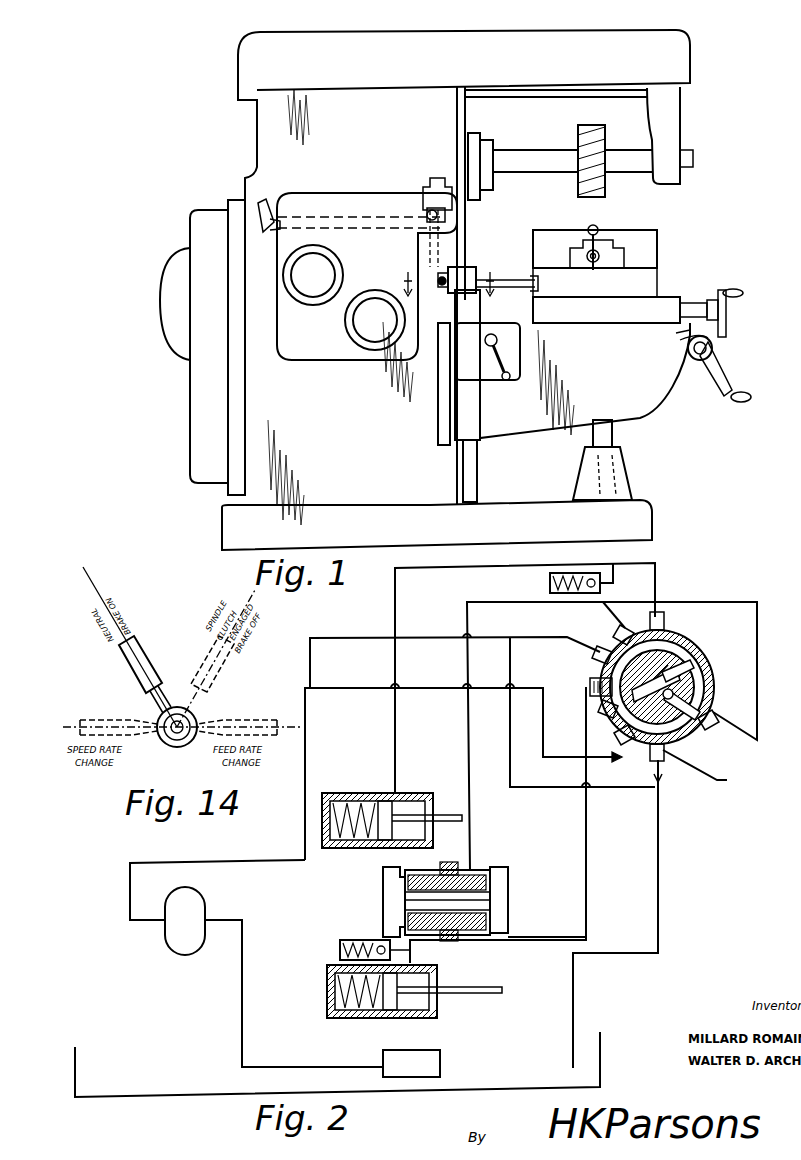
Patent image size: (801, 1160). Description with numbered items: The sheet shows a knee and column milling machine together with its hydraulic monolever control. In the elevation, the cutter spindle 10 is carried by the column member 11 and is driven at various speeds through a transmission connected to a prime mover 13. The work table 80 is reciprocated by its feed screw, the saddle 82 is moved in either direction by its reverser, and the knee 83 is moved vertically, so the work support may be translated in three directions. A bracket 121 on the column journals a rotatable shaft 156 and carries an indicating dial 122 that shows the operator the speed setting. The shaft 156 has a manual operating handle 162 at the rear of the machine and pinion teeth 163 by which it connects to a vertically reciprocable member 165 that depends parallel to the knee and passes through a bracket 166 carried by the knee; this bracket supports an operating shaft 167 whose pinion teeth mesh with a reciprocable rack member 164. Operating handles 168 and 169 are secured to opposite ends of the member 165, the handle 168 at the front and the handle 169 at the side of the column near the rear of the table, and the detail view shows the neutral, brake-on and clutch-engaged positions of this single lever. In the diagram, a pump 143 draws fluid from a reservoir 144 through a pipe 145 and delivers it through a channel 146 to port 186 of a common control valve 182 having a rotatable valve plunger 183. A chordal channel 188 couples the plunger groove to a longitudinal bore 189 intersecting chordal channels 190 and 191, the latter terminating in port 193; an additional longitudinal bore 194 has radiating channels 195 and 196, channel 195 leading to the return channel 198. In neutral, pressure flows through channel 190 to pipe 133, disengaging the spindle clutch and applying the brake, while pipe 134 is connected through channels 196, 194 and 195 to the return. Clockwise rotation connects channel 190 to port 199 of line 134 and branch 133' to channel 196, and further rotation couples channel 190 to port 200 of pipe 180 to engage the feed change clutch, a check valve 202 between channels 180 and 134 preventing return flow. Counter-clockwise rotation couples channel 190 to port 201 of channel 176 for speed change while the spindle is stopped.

In FIG. 1, the cutter spindle 10 is at (470, 140).
In FIG. 1, the column member 11 is at (262, 127).
In FIG. 1, the prime mover 13 is at (449, 292).
In FIG. 1, the work table 80 is at (640, 238).
In FIG. 1, the saddle 82 is at (653, 295).
In FIG. 1, the knee 83 is at (660, 395).
In FIG. 1, the bracket 121 is at (325, 193).
In FIG. 1, the indicating dial 122 is at (355, 340).
In FIG. 1, the rotatable shaft 156 is at (385, 215).
In FIG. 1, the manual operating handle 162 is at (262, 200).
In FIG. 1, the pinion teeth 163 is at (443, 185).
In FIG. 1, the reciprocable rack member 164 is at (425, 205).
In FIG. 1, the vertically reciprocable member 165 is at (442, 425).
In FIG. 1, the bracket 166 is at (468, 267).
In FIG. 1, the operating shaft 167 is at (483, 280).
In FIG. 1, the operating handle 168 is at (700, 259).
In FIG. 1, the operating handle 169 is at (418, 279).
In FIG. 2, the channel 133 is at (463, 736).
In FIG. 2, the branch 133' is at (638, 717).
In FIG. 2, the channel 134 is at (537, 603).
In FIG. 2, the pump 143 is at (188, 903).
In FIG. 2, the reservoir 144 is at (603, 1057).
In FIG. 2, the pipe 145 is at (242, 982).
In FIG. 2, the channel 146 is at (130, 910).
In FIG. 2, the channel 176 is at (590, 757).
In FIG. 2, the pressure pipe 180 is at (655, 563).
In FIG. 2, the common control valve 182 is at (703, 668).
In FIG. 2, the rotatable valve plunger 183 is at (706, 684).
In FIG. 2, the port 186 is at (648, 752).
In FIG. 2, the chordal channel 188 is at (620, 733).
In FIG. 2, the longitudinal bore 189 is at (614, 647).
In FIG. 2, the chordal channel 190 is at (592, 680).
In FIG. 2, the chordal channel 191 is at (678, 660).
In FIG. 2, the port 193 is at (700, 656).
In FIG. 2, the longitudinal bore 194 is at (710, 698).
In FIG. 2, the channel 195 is at (672, 750).
In FIG. 2, the channel 196 is at (700, 728).
In FIG. 2, the return channel 198 is at (661, 929).
In FIG. 2, the port 199 is at (634, 630).
In FIG. 2, the port 200 is at (670, 652).
In FIG. 2, the port 201 is at (608, 712).
In FIG. 2, the check valve 202 is at (573, 573).